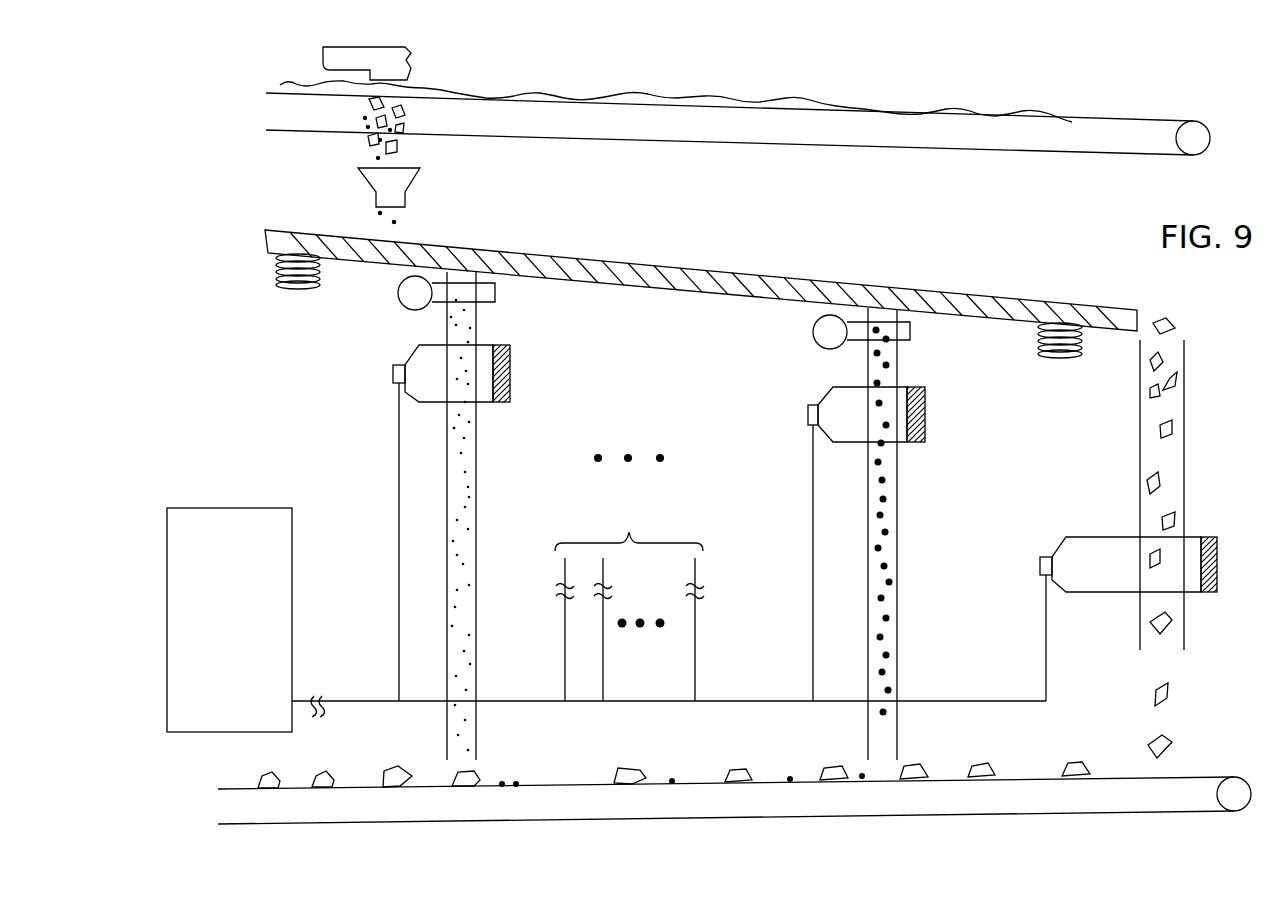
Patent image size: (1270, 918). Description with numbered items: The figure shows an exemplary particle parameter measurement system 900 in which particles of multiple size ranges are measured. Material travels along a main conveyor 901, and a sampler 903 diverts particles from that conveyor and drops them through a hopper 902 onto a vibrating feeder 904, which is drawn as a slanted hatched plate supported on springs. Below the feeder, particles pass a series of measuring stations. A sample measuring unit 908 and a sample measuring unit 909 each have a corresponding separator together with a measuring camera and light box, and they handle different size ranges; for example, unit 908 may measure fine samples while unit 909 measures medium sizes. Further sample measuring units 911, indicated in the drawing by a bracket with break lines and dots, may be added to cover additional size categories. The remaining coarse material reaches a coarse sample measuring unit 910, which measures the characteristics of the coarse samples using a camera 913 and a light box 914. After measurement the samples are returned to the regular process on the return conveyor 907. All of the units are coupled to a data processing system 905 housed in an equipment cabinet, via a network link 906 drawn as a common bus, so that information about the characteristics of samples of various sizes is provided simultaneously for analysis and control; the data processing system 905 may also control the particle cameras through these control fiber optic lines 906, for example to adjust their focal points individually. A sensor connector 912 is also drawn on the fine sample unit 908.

The particle parameter measurement system 900 is at (1110, 47).
The main conveyor 901 is at (765, 134).
The hopper 902 is at (420, 178).
The sampler 903 is at (412, 56).
The vibrating feeder 904 is at (628, 262).
The data processing system 905 is at (292, 537).
The network link 906 is at (345, 701).
The conveyor 907 is at (903, 809).
The sample measuring unit 908 is at (368, 349).
The sample measuring unit 909 is at (760, 370).
The coarse sample measuring unit 910 is at (1230, 441).
The sample measuring units 911 is at (629, 577).
The sensor connector 912 is at (396, 375).
The camera 913 is at (398, 291).
The light box 914 is at (1218, 556).